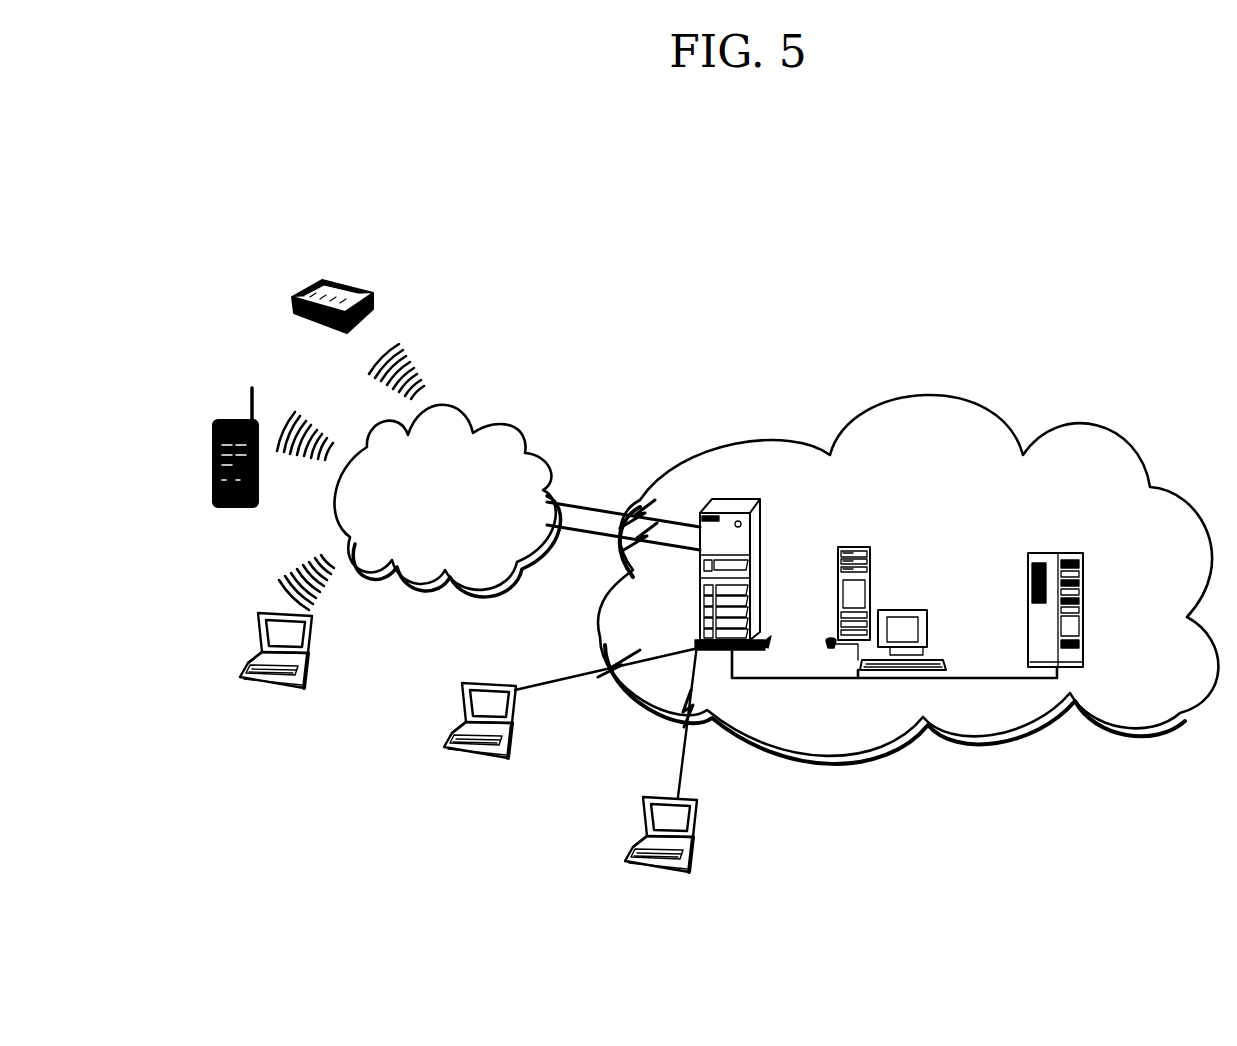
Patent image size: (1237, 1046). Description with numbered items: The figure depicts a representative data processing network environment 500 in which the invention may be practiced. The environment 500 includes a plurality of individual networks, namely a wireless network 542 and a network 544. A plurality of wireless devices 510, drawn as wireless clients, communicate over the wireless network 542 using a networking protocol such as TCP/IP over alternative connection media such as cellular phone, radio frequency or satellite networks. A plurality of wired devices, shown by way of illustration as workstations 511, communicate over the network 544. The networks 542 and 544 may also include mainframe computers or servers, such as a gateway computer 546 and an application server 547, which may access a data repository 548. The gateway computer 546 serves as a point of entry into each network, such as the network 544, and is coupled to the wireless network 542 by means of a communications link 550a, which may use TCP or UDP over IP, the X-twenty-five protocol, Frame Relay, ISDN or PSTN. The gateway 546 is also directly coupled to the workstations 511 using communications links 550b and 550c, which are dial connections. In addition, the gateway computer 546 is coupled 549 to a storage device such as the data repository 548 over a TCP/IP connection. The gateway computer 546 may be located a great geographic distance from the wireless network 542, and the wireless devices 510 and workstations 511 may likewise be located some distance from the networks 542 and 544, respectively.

The data processing network environment 500 is at (707, 225).
The wireless devices 510 is at (313, 517).
The workstations 511 is at (566, 797).
The wireless network 542 is at (448, 496).
The network 544 is at (908, 570).
The gateway computer 546 is at (751, 573).
The application server 547 is at (886, 592).
The data repository 548 is at (1080, 610).
The coupling 549 is at (894, 682).
The communications link 550a is at (623, 486).
The communications link 550b is at (609, 703).
The communications link 550c is at (711, 721).